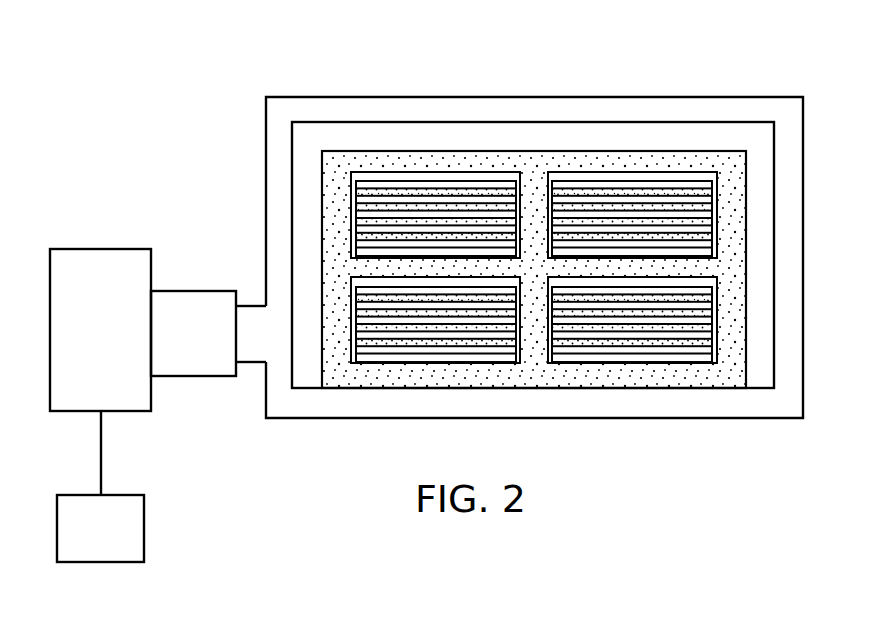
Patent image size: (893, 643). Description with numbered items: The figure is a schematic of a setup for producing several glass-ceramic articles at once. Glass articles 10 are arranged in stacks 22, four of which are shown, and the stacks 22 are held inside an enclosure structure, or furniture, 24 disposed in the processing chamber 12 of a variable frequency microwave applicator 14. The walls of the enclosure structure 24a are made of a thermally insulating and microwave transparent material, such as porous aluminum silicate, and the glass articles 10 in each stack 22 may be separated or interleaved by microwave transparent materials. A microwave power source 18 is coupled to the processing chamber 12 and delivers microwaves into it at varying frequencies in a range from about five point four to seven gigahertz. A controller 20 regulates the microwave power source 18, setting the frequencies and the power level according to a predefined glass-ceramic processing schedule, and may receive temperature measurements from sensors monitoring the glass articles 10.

The glass article 10 is at (475, 185).
The processing chamber 12 is at (650, 139).
The variable frequency microwave applicator 14 is at (570, 88).
The microwave power source 18 is at (96, 259).
The controller 20 is at (106, 553).
The stack 22 is at (430, 180).
The enclosure structure 24 is at (720, 150).
The walls of the enclosure structure 24a is at (735, 203).